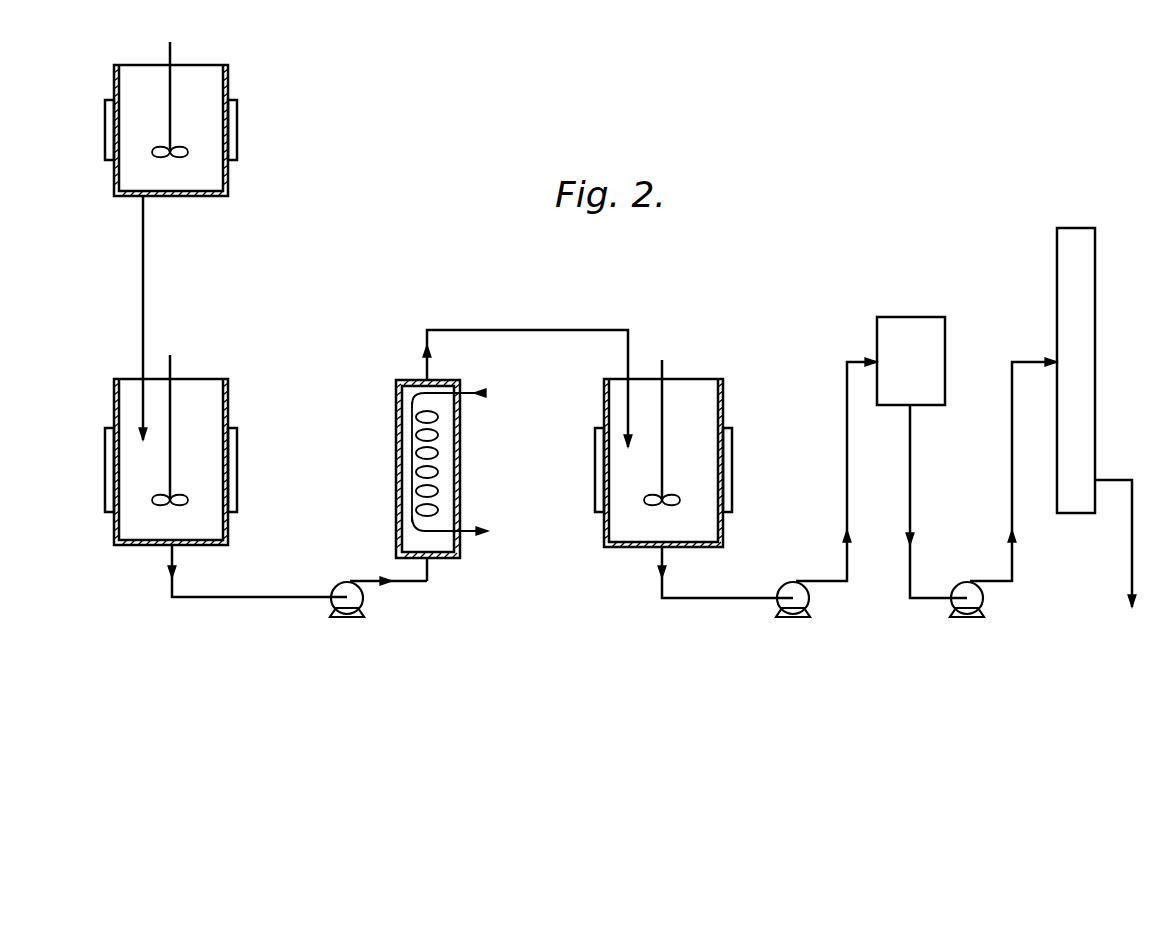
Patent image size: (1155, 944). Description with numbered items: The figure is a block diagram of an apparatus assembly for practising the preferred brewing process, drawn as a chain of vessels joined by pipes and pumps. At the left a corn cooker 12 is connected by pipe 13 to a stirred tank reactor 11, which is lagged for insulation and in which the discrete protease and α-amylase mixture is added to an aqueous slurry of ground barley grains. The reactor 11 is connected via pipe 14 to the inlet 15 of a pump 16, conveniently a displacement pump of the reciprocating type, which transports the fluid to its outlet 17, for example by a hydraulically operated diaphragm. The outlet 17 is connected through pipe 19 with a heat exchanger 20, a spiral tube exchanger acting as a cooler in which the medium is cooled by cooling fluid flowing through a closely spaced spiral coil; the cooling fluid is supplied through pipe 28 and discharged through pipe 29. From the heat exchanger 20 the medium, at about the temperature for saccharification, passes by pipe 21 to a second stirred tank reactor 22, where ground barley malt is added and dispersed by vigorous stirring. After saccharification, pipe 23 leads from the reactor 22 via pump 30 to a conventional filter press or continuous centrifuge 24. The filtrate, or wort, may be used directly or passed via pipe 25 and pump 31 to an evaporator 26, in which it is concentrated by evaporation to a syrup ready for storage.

The stirred tank reactor 11 is at (148, 548).
The corn cooker 12 is at (237, 138).
The pipe 13 is at (145, 273).
The pipe 14 is at (175, 588).
The inlet 15 is at (333, 588).
The pump 16 is at (362, 598).
The outlet 17 is at (370, 547).
The pipe 19 is at (428, 582).
The heat exchanger 20 is at (397, 428).
The pipe 21 is at (535, 328).
The stirred tank reactor 22 is at (632, 548).
The pipe 23 is at (665, 591).
The filter press 24 is at (917, 317).
The pipe 25 is at (930, 597).
The evaporator 26 is at (1057, 230).
The pipe 28 is at (485, 393).
The pipe 29 is at (488, 530).
The pump 30 is at (782, 590).
The pump 31 is at (985, 598).